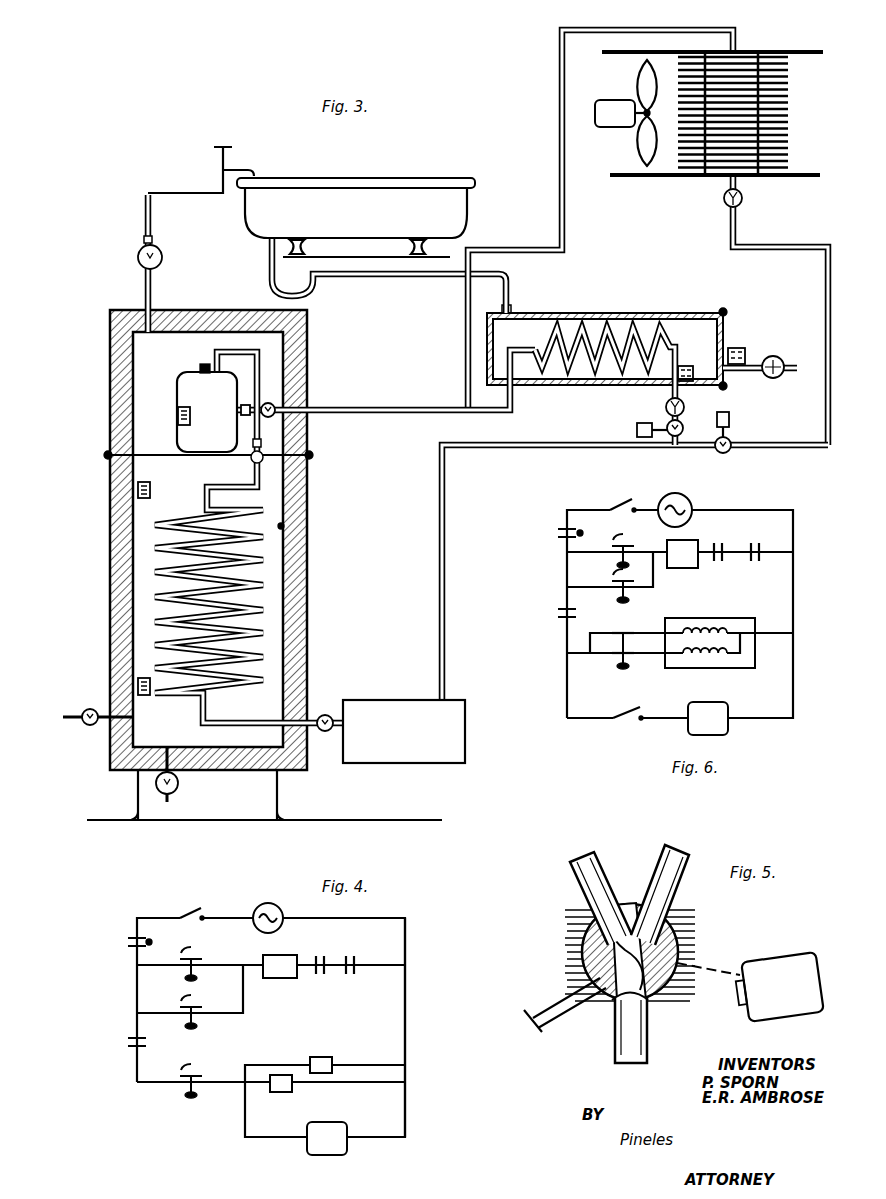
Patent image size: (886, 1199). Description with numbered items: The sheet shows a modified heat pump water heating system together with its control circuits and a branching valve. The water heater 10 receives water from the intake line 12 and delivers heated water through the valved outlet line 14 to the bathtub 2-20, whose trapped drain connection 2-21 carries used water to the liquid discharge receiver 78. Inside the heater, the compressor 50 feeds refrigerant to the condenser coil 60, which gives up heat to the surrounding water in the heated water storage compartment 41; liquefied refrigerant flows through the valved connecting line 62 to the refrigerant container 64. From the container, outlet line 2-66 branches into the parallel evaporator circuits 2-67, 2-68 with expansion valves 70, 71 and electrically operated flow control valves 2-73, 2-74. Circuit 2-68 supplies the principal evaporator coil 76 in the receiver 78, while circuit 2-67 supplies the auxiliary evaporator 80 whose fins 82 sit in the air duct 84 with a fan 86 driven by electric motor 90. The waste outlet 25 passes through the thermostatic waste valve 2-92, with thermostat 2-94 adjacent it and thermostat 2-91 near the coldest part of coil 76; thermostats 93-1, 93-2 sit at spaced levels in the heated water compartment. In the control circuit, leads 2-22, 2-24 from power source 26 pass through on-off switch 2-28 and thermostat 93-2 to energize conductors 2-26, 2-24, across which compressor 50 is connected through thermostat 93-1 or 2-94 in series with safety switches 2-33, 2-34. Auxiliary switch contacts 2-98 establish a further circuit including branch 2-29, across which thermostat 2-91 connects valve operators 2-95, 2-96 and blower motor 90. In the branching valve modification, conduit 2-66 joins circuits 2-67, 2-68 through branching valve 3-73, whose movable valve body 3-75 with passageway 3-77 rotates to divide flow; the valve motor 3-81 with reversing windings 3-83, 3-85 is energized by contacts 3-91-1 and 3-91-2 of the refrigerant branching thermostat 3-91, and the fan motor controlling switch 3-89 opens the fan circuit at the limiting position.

In FIG. 3, the water heater 10 is at (306, 375).
In FIG. 3, the intake line 12 is at (104, 712).
In FIG. 3, the valved outlet line 14 is at (153, 294).
In FIG. 3, the waste outlet 25 is at (760, 366).
In FIG. 6, the power source 26 is at (692, 504).
In FIG. 4, the power source 26 is at (255, 911).
In FIG. 3, the heated water storage compartment 41 is at (283, 526).
In FIG. 3, the compressor 50 is at (178, 385).
In FIG. 6, the compressor 50 is at (680, 568).
In FIG. 4, the compressor 50 is at (273, 978).
In FIG. 3, the condenser coil 60 is at (185, 521).
In FIG. 3, the valved connecting line 62 is at (327, 714).
In FIG. 3, the refrigerant container 64 is at (405, 764).
In FIG. 3, the expansion valve 70 is at (743, 198).
In FIG. 3, the expansion valve 71 is at (667, 406).
In FIG. 3, the evaporator coil 76 is at (614, 330).
In FIG. 3, the liquid discharge receiver 78 is at (661, 313).
In FIG. 3, the auxiliary evaporator 80 is at (705, 178).
In FIG. 3, the fins 82 is at (792, 96).
In FIG. 3, the air duct 84 is at (660, 177).
In FIG. 3, the fan 86 is at (641, 80).
In FIG. 3, the electric motor 90 is at (612, 128).
In FIG. 6, the electric motor 90 is at (690, 707).
In FIG. 4, the electric motor 90 is at (328, 1156).
In FIG. 3, the thermostat 93-1 is at (150, 488).
In FIG. 6, the thermostat 93-1 is at (612, 585).
In FIG. 4, the thermostat 93-1 is at (210, 1006).
In FIG. 3, the thermostat 93-2 is at (138, 684).
In FIG. 6, the thermostat 93-2 is at (556, 533).
In FIG. 4, the thermostat 93-2 is at (128, 943).
In FIG. 3, the bathtub 2-20 is at (340, 176).
In FIG. 3, the trapped drain connection 2-21 is at (268, 268).
In FIG. 6, the lead 2-22 is at (576, 510).
In FIG. 4, the lead 2-22 is at (135, 923).
In FIG. 4, the lead 2-24 is at (406, 1008).
In FIG. 6, the heat pump actuating line conductor 2-26 is at (567, 560).
In FIG. 4, the heat pump actuating line conductor 2-26 is at (137, 990).
In FIG. 6, the on-off switch 2-28 is at (616, 504).
In FIG. 4, the on-off switch 2-28 is at (187, 906).
In FIG. 4, the valve circuit branch 2-29 is at (137, 1074).
In FIG. 3, the compressor high pressure safety switch 2-33 is at (204, 364).
In FIG. 6, the compressor high pressure safety switch 2-33 is at (716, 543).
In FIG. 4, the compressor high pressure safety switch 2-33 is at (318, 956).
In FIG. 3, the compressor low pressure safety switch 2-34 is at (240, 413).
In FIG. 6, the compressor low pressure safety switch 2-34 is at (756, 540).
In FIG. 4, the compressor low pressure safety switch 2-34 is at (349, 956).
In FIG. 3, the refrigerant container outlet line 2-66 is at (488, 448).
In FIG. 5, the refrigerant container outlet line 2-66 is at (614, 1057).
In FIG. 3, the evaporator circuit 2-67 is at (812, 447).
In FIG. 5, the evaporator circuit 2-67 is at (660, 857).
In FIG. 3, the evaporator circuit 2-68 is at (672, 425).
In FIG. 5, the evaporator circuit 2-68 is at (580, 871).
In FIG. 3, the electrically operated flow control valve 2-73 is at (732, 446).
In FIG. 3, the electrically operated flow control valve 2-74 is at (672, 436).
In FIG. 3, the thermostat 2-91 is at (686, 365).
In FIG. 4, the thermostat 2-91 is at (208, 1073).
In FIG. 3, the waste valve 2-92 is at (778, 378).
In FIG. 3, the thermostat 2-94 is at (742, 343).
In FIG. 6, the thermostat 2-94 is at (625, 546).
In FIG. 4, the thermostat 2-94 is at (208, 957).
In FIG. 3, the valve operator 2-95 is at (730, 418).
In FIG. 4, the valve operator 2-95 is at (276, 1092).
In FIG. 3, the valve operator 2-96 is at (637, 431).
In FIG. 4, the valve operator 2-96 is at (320, 1058).
In FIG. 3, the auxiliary switch contacts 2-98 is at (180, 424).
In FIG. 6, the auxiliary switch contacts 2-98 is at (558, 615).
In FIG. 4, the auxiliary switch contacts 2-98 is at (128, 1041).
In FIG. 5, the branching valve 3-73 is at (566, 943).
In FIG. 5, the movable valve body 3-75 is at (690, 934).
In FIG. 5, the passageway 3-77 is at (666, 992).
In FIG. 6, the valve motor 3-81 is at (732, 622).
In FIG. 5, the valve motor 3-81 is at (785, 970).
In FIG. 6, the reversing winding 3-83 is at (702, 630).
In FIG. 6, the reversing winding 3-85 is at (712, 658).
In FIG. 6, the fan motor controlling switch 3-89 is at (625, 716).
In FIG. 5, the fan motor controlling switch 3-89 is at (557, 1005).
In FIG. 6, the refrigerant branching thermostat 3-91 is at (630, 645).
In FIG. 6, the contacts 3-91-1 is at (630, 663).
In FIG. 6, the contacts 3-91-2 is at (618, 640).